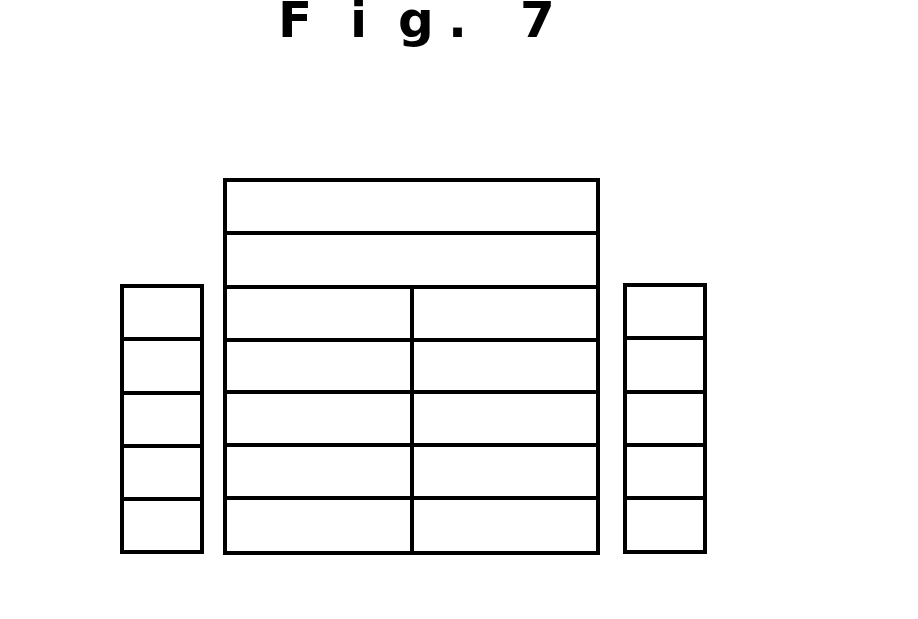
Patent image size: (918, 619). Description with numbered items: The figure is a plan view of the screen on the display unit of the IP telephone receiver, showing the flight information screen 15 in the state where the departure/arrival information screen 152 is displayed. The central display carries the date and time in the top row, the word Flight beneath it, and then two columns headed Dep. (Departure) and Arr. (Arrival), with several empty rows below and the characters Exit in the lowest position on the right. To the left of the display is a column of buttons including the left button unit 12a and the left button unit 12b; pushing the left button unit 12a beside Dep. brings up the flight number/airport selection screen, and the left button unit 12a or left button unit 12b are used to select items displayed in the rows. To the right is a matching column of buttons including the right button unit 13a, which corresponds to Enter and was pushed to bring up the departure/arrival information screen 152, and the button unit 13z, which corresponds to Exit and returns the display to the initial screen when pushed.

The screen 15 is at (533, 180).
The departure/arrival information screen 152 is at (572, 365).
The left button unit 12a is at (172, 298).
The left button unit 12b is at (128, 382).
The right button unit 13a is at (687, 317).
The button unit 13z is at (688, 525).